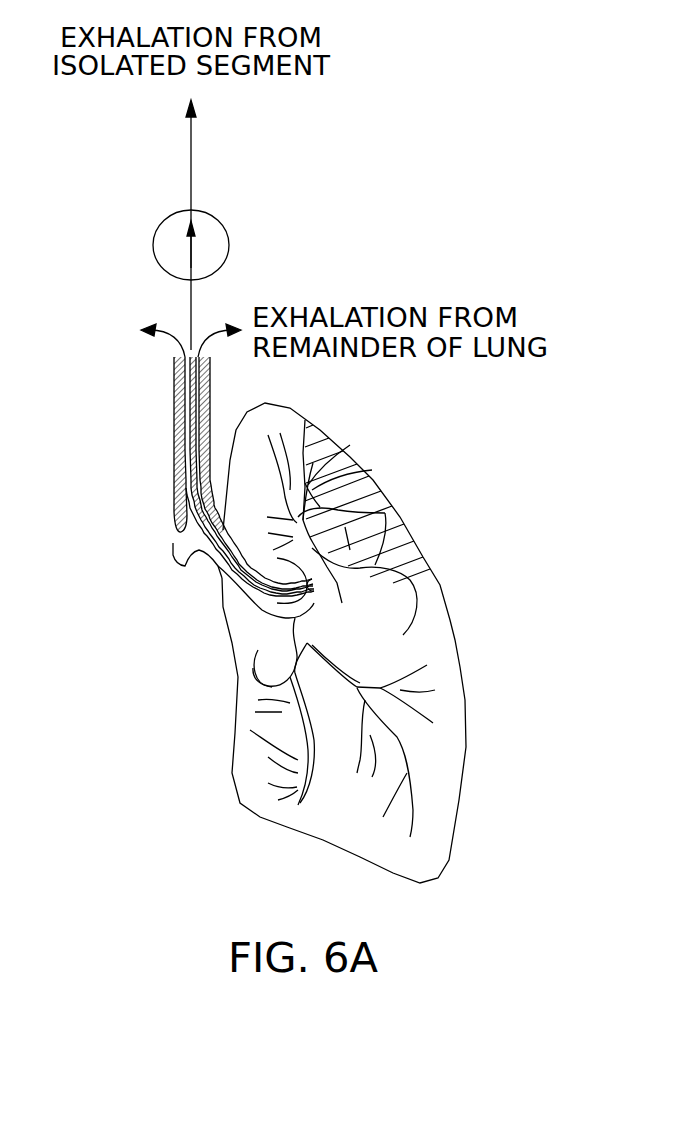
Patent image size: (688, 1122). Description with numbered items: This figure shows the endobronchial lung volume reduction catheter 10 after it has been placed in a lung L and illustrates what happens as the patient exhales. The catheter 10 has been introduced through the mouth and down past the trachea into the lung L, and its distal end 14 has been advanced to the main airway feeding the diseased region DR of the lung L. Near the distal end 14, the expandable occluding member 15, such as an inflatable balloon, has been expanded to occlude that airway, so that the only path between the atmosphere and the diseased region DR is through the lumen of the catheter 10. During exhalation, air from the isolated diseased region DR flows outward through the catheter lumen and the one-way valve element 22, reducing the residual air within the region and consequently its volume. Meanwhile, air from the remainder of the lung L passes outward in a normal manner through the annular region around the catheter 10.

The endobronchial lung volume reduction catheter 10 is at (173, 543).
The distal end 14 is at (328, 594).
The expandable occluding member 15 is at (320, 594).
The one-way valve element 22 is at (222, 213).
The diseased region DR is at (368, 463).
The lung L is at (455, 640).